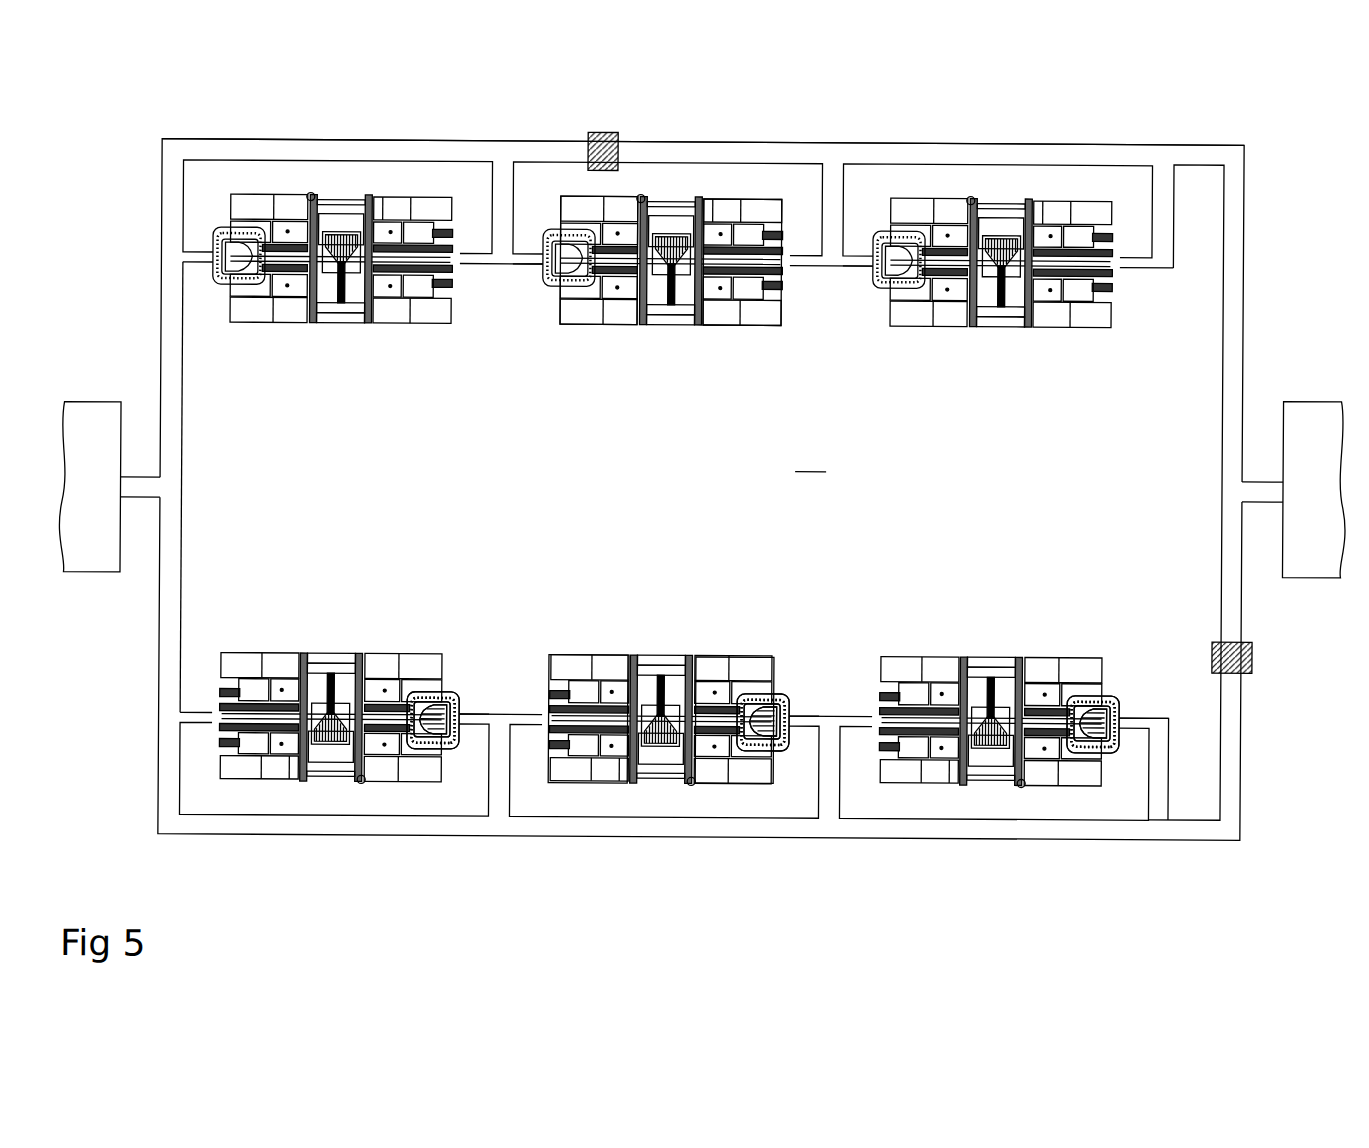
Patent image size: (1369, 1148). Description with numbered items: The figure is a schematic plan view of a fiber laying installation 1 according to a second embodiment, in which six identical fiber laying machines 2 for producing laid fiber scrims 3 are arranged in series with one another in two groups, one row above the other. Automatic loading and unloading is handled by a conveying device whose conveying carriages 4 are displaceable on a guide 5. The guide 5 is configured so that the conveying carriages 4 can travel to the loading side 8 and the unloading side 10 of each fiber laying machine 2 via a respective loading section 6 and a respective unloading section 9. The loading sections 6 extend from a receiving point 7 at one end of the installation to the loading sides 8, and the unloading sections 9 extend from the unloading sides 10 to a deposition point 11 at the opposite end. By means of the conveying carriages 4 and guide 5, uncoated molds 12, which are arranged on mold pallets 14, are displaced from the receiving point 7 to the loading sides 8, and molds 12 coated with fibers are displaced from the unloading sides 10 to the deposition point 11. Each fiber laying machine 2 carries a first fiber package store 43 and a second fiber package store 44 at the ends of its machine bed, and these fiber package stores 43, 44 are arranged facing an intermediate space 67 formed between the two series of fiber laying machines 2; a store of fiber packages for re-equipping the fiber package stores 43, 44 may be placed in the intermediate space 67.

The fiber laying installation 1 is at (823, 138).
The fiber laying machine 2 is at (343, 330).
The laid fiber scrim 3 is at (436, 748).
The conveying carriage 4 is at (600, 133).
The guide 5 is at (275, 138).
The loading section 6 is at (203, 255).
The receiving point 7 is at (95, 408).
The loading side 8 is at (210, 250).
The unloading section 9 is at (477, 265).
The unloading side 10 is at (477, 256).
The deposition point 11 is at (1312, 400).
The mold 12 is at (333, 230).
The mold pallet 14 is at (346, 230).
The first fiber package store 43 is at (612, 322).
The second fiber package store 44 is at (748, 322).
The intermediate space 67 is at (810, 456).